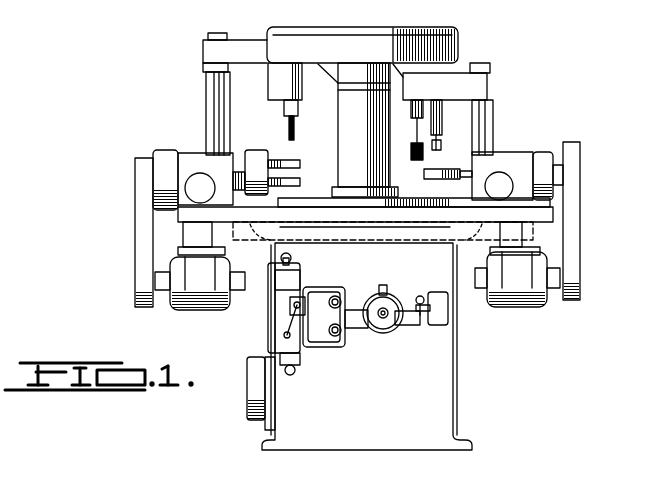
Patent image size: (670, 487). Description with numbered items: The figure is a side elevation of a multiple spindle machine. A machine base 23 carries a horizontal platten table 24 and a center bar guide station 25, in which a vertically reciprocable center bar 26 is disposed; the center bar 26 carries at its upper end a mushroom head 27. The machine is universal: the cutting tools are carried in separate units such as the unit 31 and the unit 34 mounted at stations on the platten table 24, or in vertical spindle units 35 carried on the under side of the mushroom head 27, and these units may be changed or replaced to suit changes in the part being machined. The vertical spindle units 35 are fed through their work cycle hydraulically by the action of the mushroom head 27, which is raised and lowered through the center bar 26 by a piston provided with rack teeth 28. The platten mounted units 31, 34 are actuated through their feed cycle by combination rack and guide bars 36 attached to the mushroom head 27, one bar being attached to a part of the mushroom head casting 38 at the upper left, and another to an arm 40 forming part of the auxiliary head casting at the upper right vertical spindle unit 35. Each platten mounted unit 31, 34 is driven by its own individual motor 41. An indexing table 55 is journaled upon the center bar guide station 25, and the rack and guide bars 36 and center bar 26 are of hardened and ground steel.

The machine base 23 is at (452, 363).
The platten table 24 is at (553, 218).
The center bar guide station 25 is at (278, 88).
The center bar 26 is at (337, 92).
The mushroom head 27 is at (460, 42).
The rack teeth 28 is at (350, 137).
The cutting tool unit 31 is at (190, 158).
The cutting tool unit 34 is at (545, 157).
The vertical spindle unit 35 is at (487, 72).
The rack and guide bar 36 is at (205, 70).
The part of the mushroom head casting 38 is at (238, 46).
The arm 40 is at (430, 83).
The motor 41 is at (195, 312).
The indexing table 55 is at (450, 195).